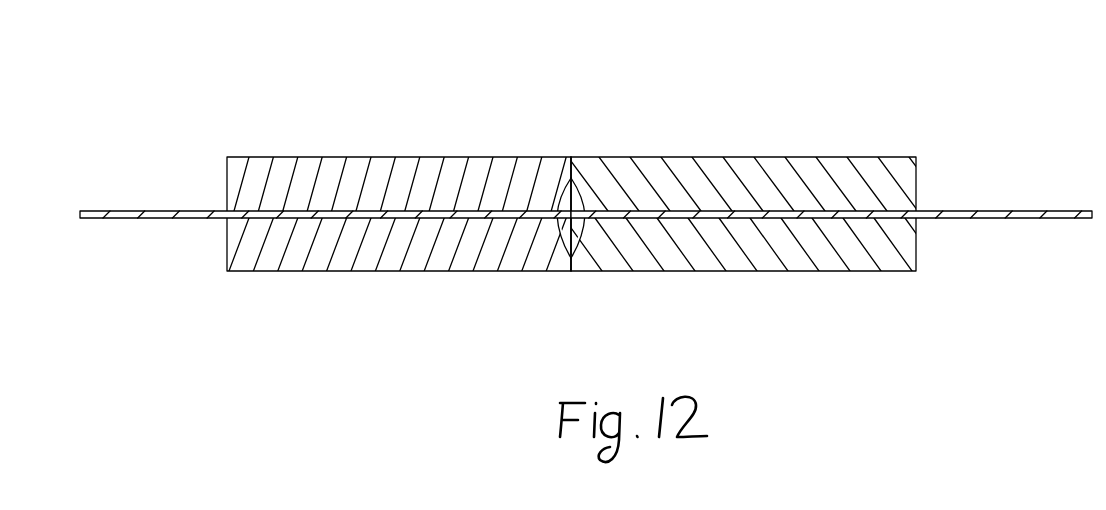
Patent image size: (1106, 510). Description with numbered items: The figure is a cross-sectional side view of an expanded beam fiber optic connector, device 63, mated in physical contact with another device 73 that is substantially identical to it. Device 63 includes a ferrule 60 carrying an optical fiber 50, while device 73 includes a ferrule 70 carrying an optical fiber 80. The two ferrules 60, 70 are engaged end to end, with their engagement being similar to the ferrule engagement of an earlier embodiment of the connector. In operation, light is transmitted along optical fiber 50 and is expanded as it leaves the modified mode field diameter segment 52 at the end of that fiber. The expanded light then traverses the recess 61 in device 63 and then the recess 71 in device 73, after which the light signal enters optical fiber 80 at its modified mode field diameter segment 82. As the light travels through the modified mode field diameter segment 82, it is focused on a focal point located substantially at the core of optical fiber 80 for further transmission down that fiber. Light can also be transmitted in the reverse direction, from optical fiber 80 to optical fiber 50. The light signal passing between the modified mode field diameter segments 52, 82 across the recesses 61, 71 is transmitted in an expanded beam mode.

The optical fiber 50 is at (1048, 210).
The modified mode field diameter segment 52 is at (585, 213).
The ferrule 60 is at (830, 157).
The recess 61 is at (586, 224).
The device 63 is at (940, 62).
The ferrule 70 is at (333, 157).
The recess 71 is at (561, 222).
The device 73 is at (458, 58).
The optical fiber 80 is at (152, 212).
The modified mode field diameter segment 82 is at (558, 213).